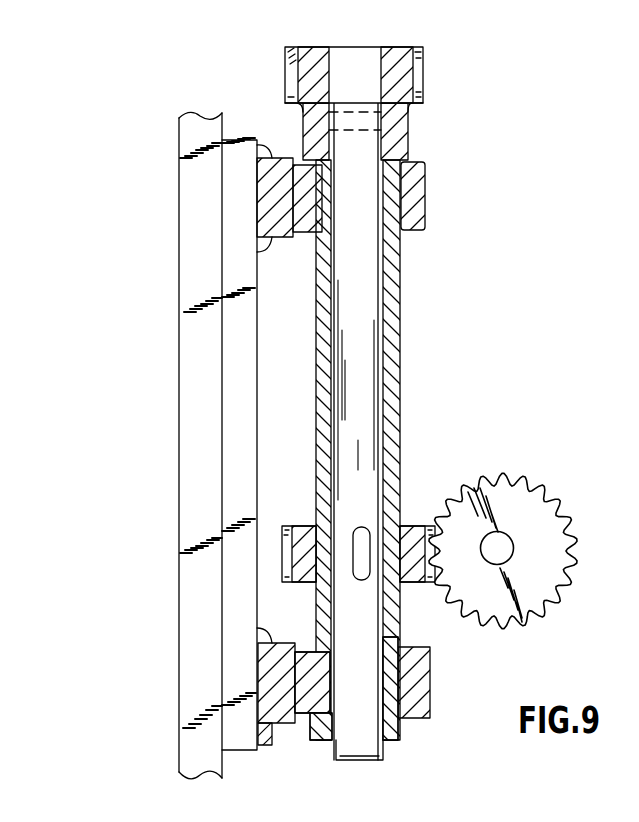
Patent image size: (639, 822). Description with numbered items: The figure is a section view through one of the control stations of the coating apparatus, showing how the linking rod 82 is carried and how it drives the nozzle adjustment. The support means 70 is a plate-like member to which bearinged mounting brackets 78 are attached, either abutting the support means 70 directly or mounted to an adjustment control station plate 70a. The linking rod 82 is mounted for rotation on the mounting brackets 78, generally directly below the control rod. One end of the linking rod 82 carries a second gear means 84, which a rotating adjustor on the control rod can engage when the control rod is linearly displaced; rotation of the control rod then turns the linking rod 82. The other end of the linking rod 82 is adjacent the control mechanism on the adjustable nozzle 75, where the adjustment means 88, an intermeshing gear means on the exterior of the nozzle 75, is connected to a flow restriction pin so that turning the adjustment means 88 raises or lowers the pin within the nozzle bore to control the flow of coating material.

The support means 70 is at (184, 452).
The adjustment control station plates 70a is at (237, 751).
The bearinged mounting brackets 78 is at (288, 730).
The linking rod 82 is at (362, 387).
The second gear means 84 is at (424, 80).
The adjustment means 88 is at (532, 556).
The adjustable nozzle 75 is at (553, 598).